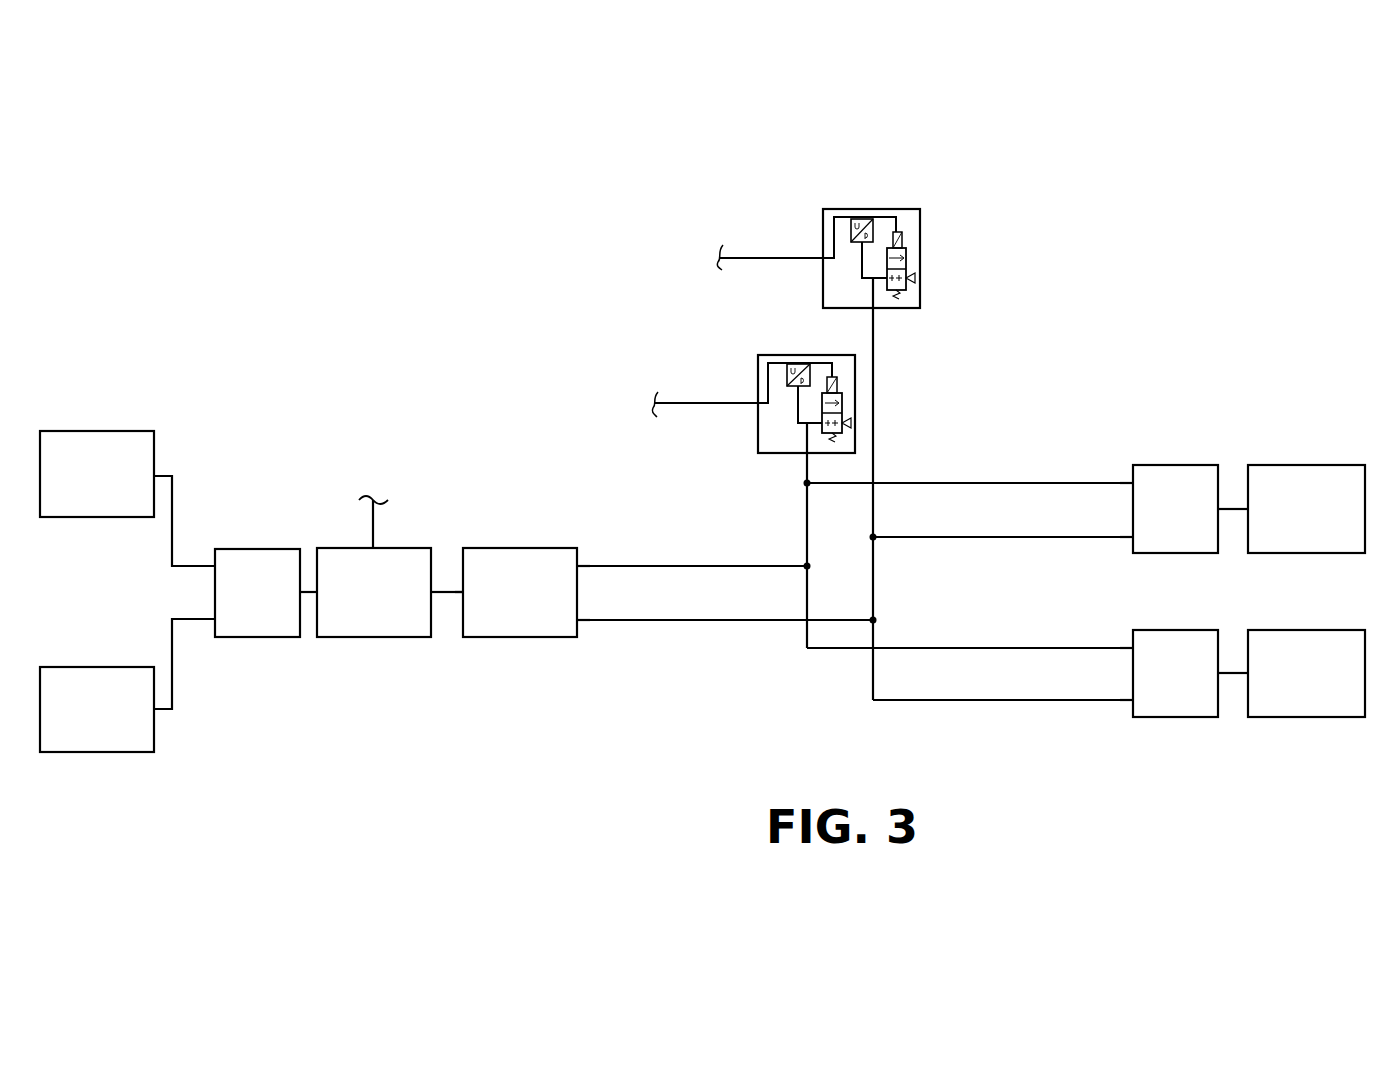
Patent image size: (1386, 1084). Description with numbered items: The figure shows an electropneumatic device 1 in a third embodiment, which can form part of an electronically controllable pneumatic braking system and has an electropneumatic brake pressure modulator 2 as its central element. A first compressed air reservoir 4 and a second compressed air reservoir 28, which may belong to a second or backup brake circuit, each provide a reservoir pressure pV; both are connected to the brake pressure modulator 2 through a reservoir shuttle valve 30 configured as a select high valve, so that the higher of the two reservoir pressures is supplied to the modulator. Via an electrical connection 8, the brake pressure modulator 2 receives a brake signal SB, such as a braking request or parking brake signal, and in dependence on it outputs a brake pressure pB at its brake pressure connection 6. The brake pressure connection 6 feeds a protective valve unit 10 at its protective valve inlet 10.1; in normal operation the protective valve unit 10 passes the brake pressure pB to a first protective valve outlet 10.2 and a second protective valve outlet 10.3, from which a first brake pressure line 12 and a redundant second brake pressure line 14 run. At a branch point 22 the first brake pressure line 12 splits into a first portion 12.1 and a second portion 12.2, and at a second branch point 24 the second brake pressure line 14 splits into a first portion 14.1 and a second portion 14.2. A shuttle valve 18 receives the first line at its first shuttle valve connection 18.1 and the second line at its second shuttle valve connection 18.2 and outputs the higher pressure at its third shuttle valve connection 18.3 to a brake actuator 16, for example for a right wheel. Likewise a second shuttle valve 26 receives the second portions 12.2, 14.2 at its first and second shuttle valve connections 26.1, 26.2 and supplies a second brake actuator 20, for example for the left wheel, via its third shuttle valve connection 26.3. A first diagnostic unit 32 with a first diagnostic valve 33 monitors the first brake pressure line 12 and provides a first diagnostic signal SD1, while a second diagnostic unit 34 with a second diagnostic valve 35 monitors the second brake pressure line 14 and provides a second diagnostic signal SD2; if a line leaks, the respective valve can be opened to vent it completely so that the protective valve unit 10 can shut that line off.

The electropneumatic device 1 is at (243, 303).
The electropneumatic brake pressure modulator 2 is at (374, 592).
The compressed air reservoir 4 is at (97, 474).
The brake pressure connection 6 is at (443, 590).
The electrical connection 8 is at (372, 547).
The protective valve unit 10 is at (520, 592).
The protective valve inlet 10.1 is at (452, 588).
The first protective valve outlet 10.2 is at (578, 565).
The second protective valve outlet 10.3 is at (580, 622).
The first brake pressure line 12 is at (664, 565).
The first portion of the first brake pressure line 12.1 is at (1022, 483).
The second portion of the first brake pressure line 12.2 is at (972, 647).
The second brake pressure line 14 is at (667, 621).
The first portion of the second brake pressure line 14.1 is at (973, 537).
The second portion of the second brake pressure line 14.2 is at (928, 702).
The brake actuator 16 is at (1306, 509).
The shuttle valve 18 is at (1175, 509).
The first shuttle valve connection 18.1 is at (1133, 483).
The second shuttle valve connection 18.2 is at (1133, 537).
The third shuttle valve connection 18.3 is at (1218, 509).
The second brake actuator 20 is at (1306, 673).
The branch point 22 is at (810, 565).
The second branch point 24 is at (875, 619).
The second shuttle valve 26 is at (1175, 673).
The first shuttle valve connection 26.1 is at (1133, 648).
The second shuttle valve connection 26.2 is at (1133, 700).
The third shuttle valve connection 26.3 is at (1218, 673).
The second compressed air reservoir 28 is at (97, 709).
The reservoir shuttle valve 30 is at (266, 593).
The first diagnostic unit 32 is at (812, 386).
The first diagnostic valve 33 is at (843, 393).
The second diagnostic unit 34 is at (877, 240).
The second diagnostic valve 35 is at (907, 250).
The reservoir pressure pV is at (173, 517).
The brake pressure pB is at (447, 597).
The brake signal SB is at (375, 530).
The first diagnostic signal SD1 is at (702, 403).
The second diagnostic signal SD2 is at (764, 257).